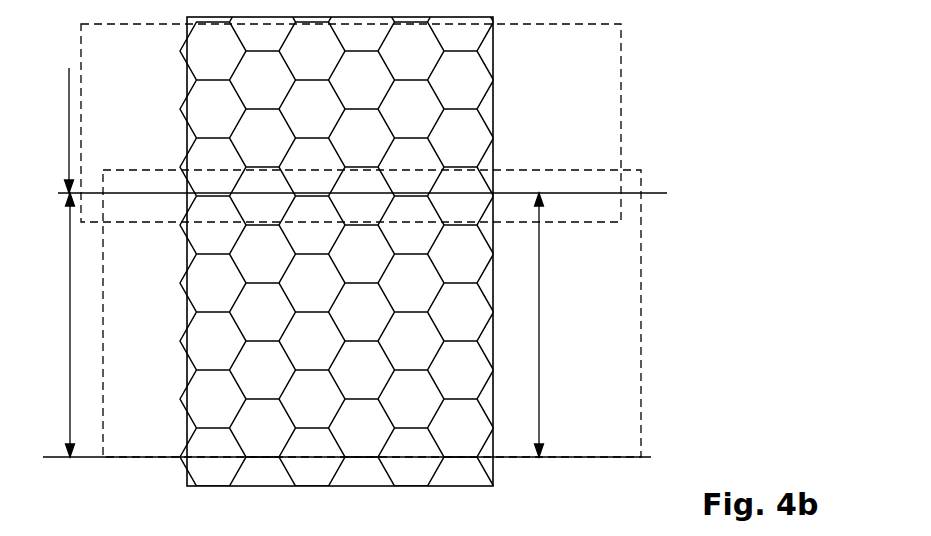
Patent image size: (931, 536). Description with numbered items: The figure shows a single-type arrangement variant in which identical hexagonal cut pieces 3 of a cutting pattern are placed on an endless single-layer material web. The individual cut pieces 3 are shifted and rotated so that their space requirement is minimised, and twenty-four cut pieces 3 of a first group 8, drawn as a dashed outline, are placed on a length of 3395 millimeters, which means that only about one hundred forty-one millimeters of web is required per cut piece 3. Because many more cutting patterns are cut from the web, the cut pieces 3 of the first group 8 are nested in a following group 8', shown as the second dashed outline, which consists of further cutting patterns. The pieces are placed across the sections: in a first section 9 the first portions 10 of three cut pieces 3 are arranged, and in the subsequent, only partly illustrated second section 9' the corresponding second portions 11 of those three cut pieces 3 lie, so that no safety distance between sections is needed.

The cut piece 3 is at (480, 265).
The first group 8 is at (418, 313).
The following group 8' is at (400, 123).
The first section 9 is at (56, 325).
The second section 9' is at (53, 130).
The first portions 10 is at (465, 203).
The second portions 11 is at (460, 175).
The length 3395 is at (525, 325).